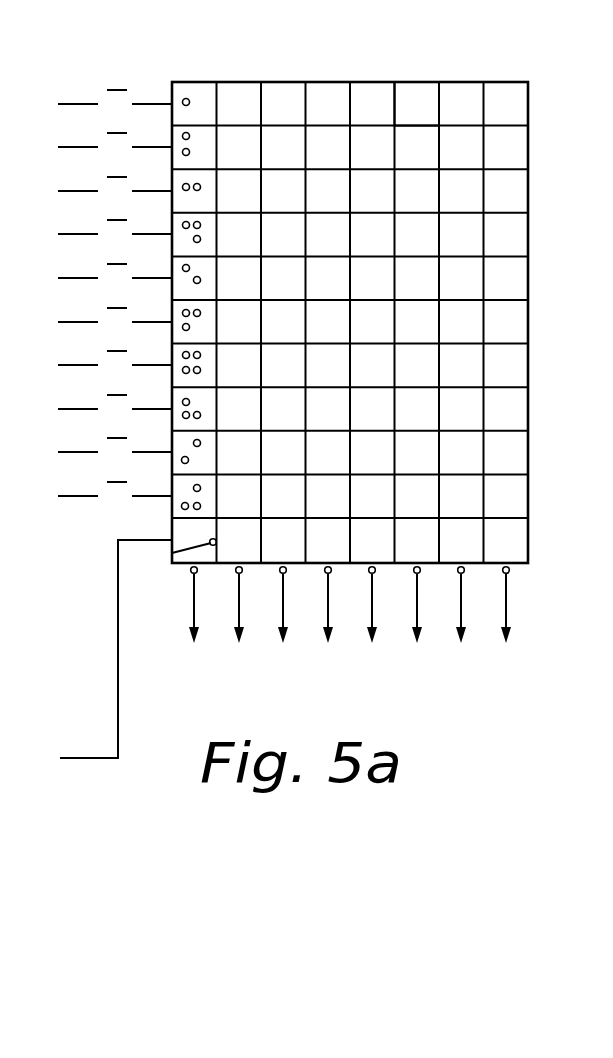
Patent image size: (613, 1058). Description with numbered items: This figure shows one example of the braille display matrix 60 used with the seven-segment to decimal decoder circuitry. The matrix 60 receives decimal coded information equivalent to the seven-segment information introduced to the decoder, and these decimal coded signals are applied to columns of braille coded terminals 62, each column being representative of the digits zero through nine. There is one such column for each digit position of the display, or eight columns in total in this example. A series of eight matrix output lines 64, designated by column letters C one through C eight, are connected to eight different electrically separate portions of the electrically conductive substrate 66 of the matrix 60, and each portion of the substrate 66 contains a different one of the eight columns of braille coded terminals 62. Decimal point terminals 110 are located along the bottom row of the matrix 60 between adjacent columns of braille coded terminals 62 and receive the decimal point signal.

The braille display matrix 60 is at (172, 82).
The braille coded terminals 62 is at (192, 516).
The matrix output lines 64 is at (236, 618).
The electrically conductive substrate 66 is at (420, 95).
The decimal point terminals 110 is at (170, 550).